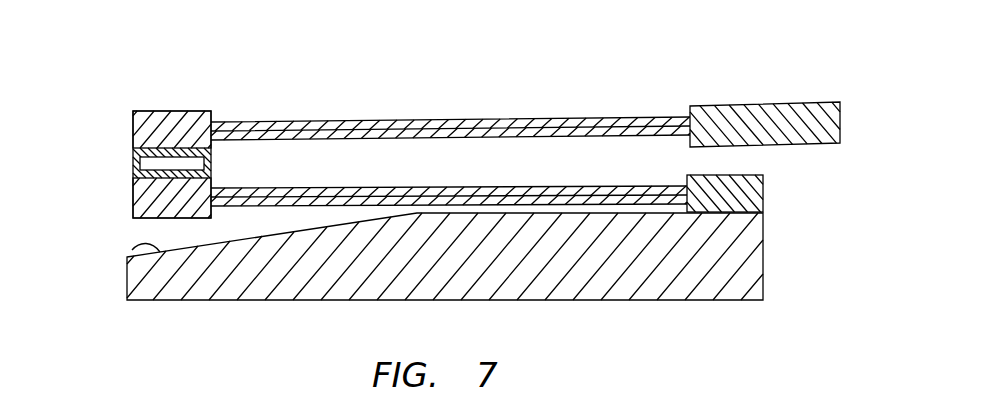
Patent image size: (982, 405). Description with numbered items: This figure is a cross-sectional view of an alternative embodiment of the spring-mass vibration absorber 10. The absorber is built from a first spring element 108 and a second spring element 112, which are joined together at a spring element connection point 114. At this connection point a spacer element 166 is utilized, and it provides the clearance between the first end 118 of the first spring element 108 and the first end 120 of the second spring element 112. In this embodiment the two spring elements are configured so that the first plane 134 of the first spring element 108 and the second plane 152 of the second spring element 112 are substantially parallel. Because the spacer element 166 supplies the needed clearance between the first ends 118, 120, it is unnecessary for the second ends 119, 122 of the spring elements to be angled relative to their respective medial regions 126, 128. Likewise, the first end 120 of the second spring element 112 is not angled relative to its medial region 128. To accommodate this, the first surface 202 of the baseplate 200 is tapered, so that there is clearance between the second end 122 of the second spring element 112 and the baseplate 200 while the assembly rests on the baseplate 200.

The vibration absorber 10 is at (760, 331).
The first spring element 108 is at (450, 104).
The second spring element 112 is at (449, 179).
The spring element connection point 114 is at (166, 157).
The first end of the first spring element 118 is at (738, 106).
The second end of the first spring element 119 is at (171, 111).
The first end of the second spring element 120 is at (763, 190).
The second end of the second spring element 122 is at (150, 218).
The medial region of the first spring element 126 is at (442, 120).
The medial region of the second spring element 128 is at (497, 187).
The first plane 134 is at (580, 118).
The second plane 152 is at (648, 188).
The spacer element 166 is at (205, 160).
The baseplate 200 is at (572, 300).
The first surface of the baseplate 202 is at (132, 250).